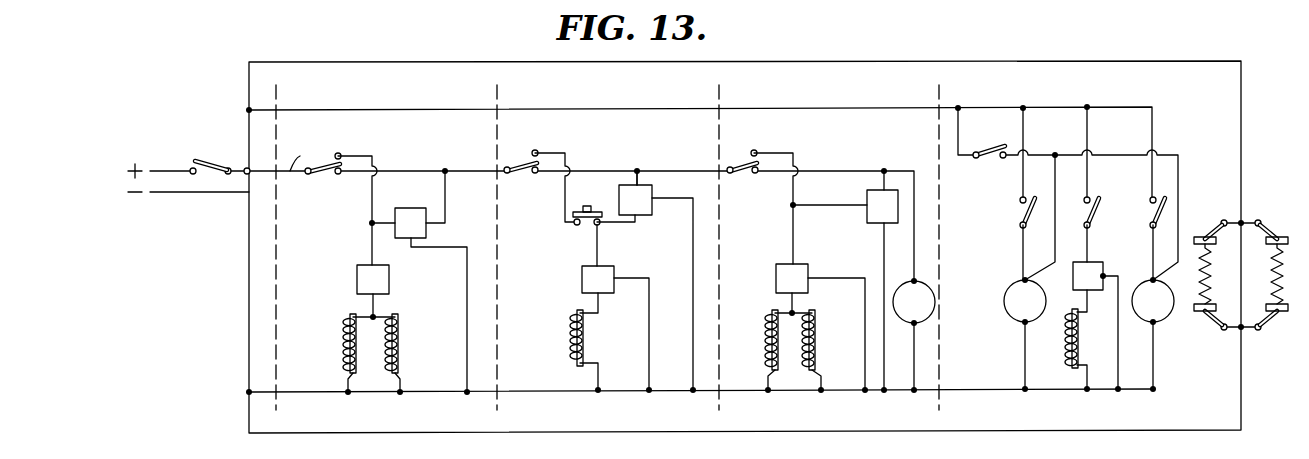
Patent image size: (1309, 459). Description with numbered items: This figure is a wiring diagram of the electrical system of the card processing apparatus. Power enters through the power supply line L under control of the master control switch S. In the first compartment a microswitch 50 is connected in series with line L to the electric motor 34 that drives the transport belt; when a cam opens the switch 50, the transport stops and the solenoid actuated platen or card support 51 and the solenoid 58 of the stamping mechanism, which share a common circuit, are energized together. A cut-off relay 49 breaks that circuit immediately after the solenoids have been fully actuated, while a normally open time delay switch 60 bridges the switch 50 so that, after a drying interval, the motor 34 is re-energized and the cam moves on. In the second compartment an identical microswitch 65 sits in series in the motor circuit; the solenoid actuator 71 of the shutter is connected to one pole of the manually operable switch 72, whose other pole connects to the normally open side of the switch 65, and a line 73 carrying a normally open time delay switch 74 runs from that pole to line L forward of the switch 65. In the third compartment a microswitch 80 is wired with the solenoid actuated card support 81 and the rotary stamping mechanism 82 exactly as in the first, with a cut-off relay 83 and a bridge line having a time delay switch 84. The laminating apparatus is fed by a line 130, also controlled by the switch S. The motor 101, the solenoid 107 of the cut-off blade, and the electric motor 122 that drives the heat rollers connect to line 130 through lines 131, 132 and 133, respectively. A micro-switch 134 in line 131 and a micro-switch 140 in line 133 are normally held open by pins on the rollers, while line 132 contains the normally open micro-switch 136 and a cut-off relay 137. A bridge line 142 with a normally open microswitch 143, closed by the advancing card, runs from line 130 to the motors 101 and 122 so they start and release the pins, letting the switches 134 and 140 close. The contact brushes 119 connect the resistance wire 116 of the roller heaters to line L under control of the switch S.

The master control switch S is at (218, 167).
The power supply line L is at (300, 157).
The microswitch 50 is at (325, 176).
The time delay switch 60 is at (426, 232).
The cut-off relay 49 is at (389, 282).
The solenoid 58 is at (346, 347).
The solenoid actuated platen or card support 51 is at (404, 347).
The microswitch 65 is at (522, 163).
The time delay switch 74 is at (626, 186).
The line 73 is at (645, 182).
The manually operable switch 72 is at (600, 210).
The solenoid actuator 71 is at (590, 337).
The microswitch 80 is at (742, 174).
The time delay switch 84 is at (866, 214).
The cut-off relay 83 is at (798, 272).
The electric motor 34 is at (905, 286).
The solenoid actuated rotary stamping mechanism 82 is at (768, 338).
The solenoid actuated card support 81 is at (821, 333).
The line 130 is at (1122, 107).
The bridge line 142 is at (1055, 152).
The microswitch 143 is at (980, 160).
The line 131 is at (1020, 190).
The micro-switch 134 is at (1018, 221).
The line 132 is at (1091, 179).
The line 133 is at (1148, 192).
The micro-switch 136 is at (1095, 222).
The micro-switch 140 is at (1168, 208).
The cut-off relay 137 is at (1097, 272).
The solenoid 107 is at (1085, 342).
The motor 101 is at (1008, 316).
The electric motor 122 is at (1165, 318).
The contact brushes 119 is at (1268, 236).
The resistance wire 116 is at (1270, 268).